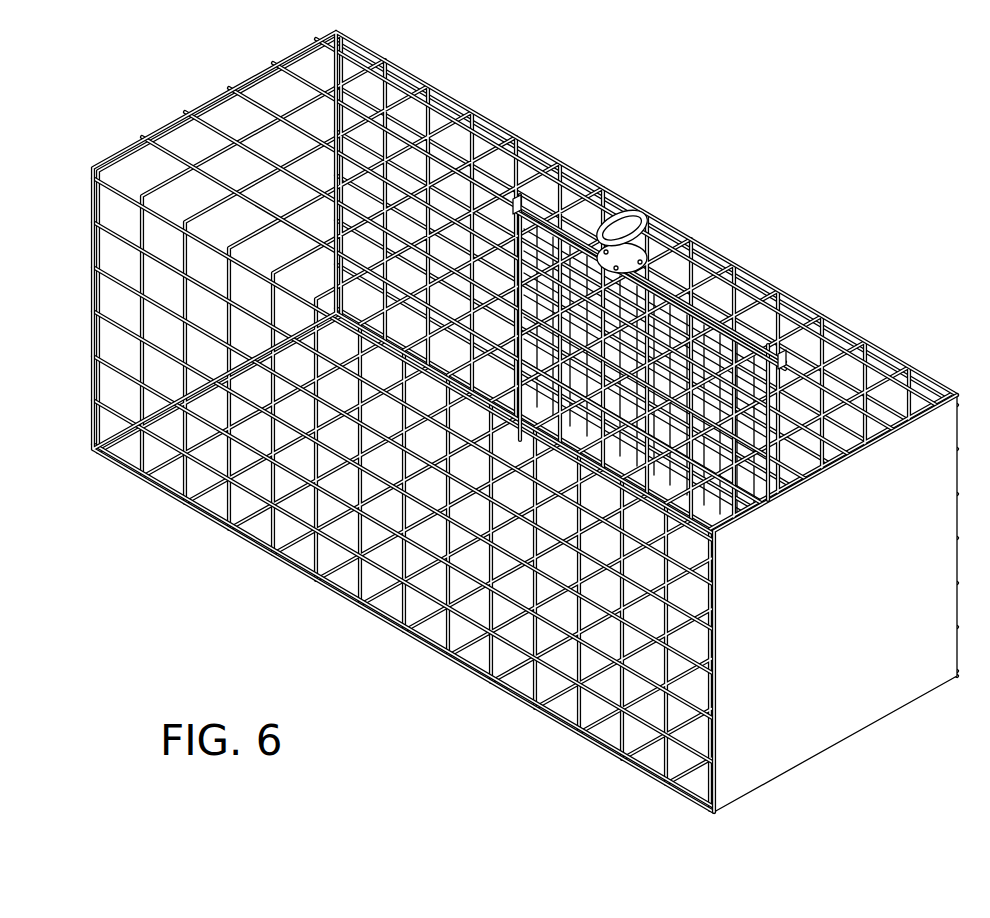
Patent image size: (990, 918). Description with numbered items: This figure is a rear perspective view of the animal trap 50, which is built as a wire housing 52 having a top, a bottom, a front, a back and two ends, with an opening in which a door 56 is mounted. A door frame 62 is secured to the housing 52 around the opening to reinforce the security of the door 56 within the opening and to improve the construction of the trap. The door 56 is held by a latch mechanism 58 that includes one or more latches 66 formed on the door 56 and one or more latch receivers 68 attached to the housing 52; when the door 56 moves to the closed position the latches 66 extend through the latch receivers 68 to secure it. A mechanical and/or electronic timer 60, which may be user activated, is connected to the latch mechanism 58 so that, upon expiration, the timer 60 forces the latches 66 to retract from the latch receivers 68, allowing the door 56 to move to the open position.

The animal trap 50 is at (525, 422).
The housing 52 is at (823, 318).
The door 56 is at (703, 345).
The latch mechanism 58 is at (615, 238).
The timer 60 is at (690, 285).
The door frame 62 is at (530, 260).
The latches 66 is at (545, 218).
The latch receivers 68 is at (522, 205).